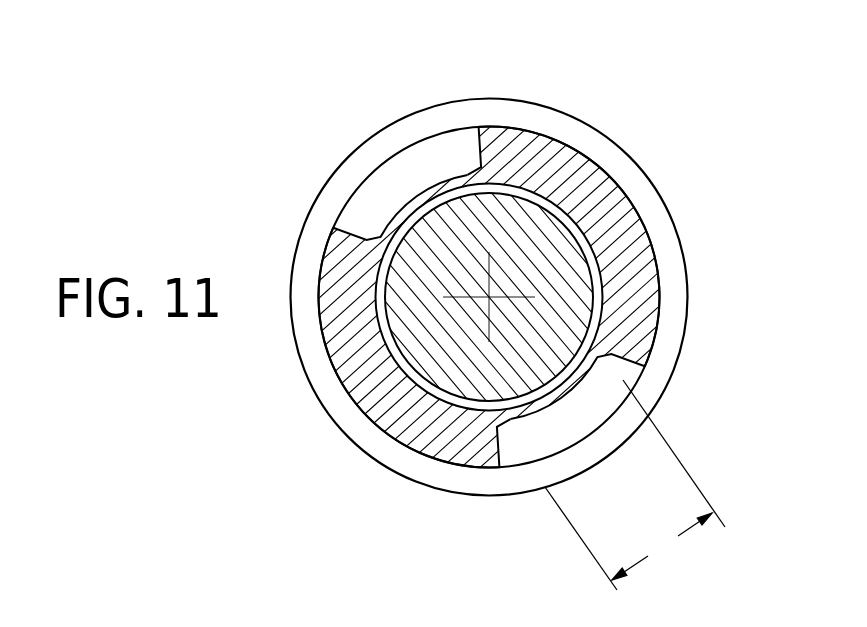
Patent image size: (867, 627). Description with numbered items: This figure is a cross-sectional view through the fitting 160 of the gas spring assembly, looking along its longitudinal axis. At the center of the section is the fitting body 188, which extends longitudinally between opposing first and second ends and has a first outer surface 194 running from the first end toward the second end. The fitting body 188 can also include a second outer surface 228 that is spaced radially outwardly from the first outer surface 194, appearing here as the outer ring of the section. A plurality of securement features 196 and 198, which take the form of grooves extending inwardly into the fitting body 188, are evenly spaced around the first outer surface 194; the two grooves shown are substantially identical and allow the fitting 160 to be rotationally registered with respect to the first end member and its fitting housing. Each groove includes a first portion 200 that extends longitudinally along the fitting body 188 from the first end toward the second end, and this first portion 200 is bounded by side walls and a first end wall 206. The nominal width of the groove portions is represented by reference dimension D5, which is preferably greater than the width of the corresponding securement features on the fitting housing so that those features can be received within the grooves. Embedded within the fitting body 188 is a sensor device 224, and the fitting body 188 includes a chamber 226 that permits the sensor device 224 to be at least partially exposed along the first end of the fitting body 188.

The fitting 160 is at (493, 297).
The fitting body 188 is at (487, 295).
The first outer surface 194 is at (489, 297).
The securement feature 196 is at (627, 420).
The securement feature 198 is at (340, 198).
The first portion 200 is at (463, 158).
The first end wall 206 is at (420, 165).
The sensor device 224 is at (442, 342).
The chamber 226 is at (383, 322).
The second outer surface 228 is at (497, 297).
The nominal width D5 is at (628, 538).